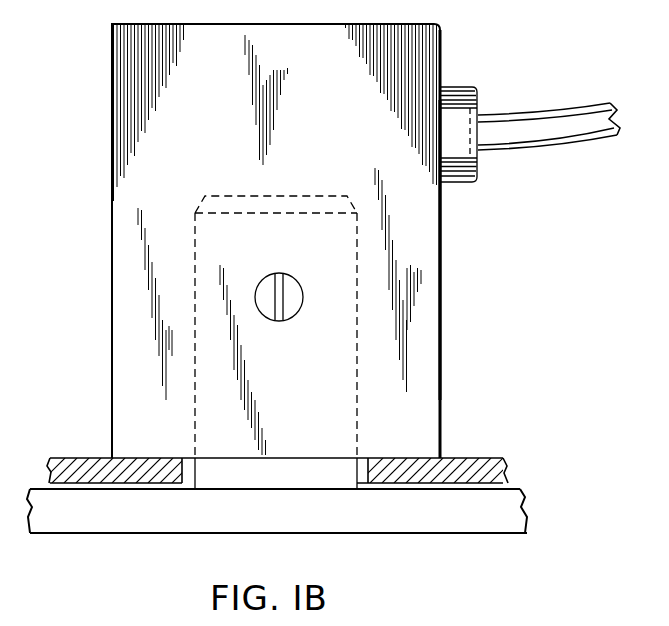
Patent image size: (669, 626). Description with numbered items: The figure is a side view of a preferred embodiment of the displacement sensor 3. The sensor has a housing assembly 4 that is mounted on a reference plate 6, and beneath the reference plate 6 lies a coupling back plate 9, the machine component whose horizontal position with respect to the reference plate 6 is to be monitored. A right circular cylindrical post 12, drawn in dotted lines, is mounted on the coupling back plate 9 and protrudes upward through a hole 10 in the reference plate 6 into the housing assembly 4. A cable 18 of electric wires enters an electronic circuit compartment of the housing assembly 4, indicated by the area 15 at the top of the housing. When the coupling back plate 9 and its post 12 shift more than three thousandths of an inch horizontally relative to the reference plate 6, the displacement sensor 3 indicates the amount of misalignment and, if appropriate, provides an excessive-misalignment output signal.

The displacement sensor 3 is at (456, 265).
The housing assembly 4 is at (441, 315).
The reference plate 6 is at (466, 458).
The coupling back plate 9 is at (522, 498).
The hole 10 is at (362, 458).
The post 12 is at (216, 191).
The area 15 is at (102, 27).
The cable 18 is at (553, 112).